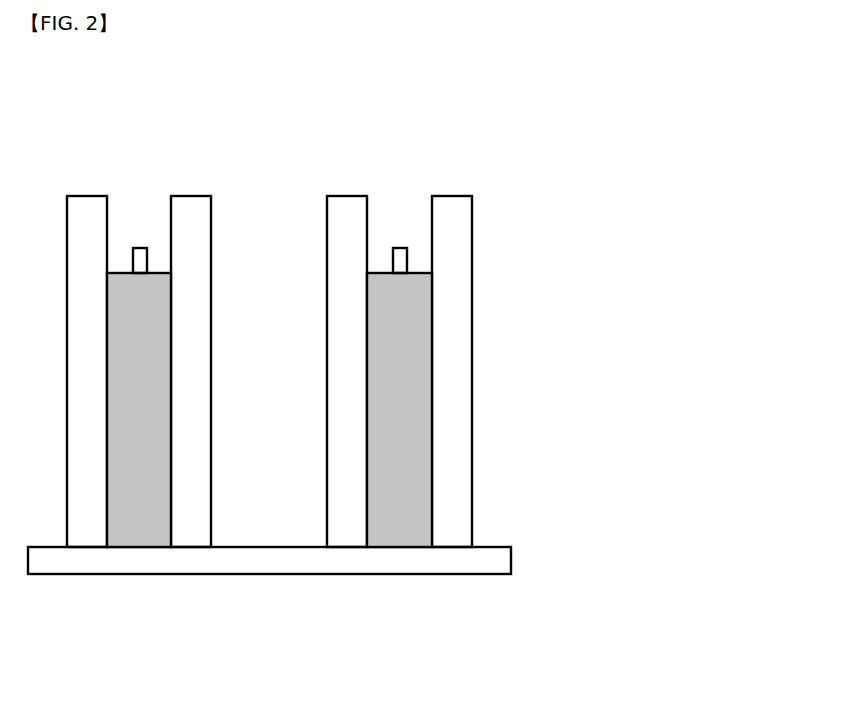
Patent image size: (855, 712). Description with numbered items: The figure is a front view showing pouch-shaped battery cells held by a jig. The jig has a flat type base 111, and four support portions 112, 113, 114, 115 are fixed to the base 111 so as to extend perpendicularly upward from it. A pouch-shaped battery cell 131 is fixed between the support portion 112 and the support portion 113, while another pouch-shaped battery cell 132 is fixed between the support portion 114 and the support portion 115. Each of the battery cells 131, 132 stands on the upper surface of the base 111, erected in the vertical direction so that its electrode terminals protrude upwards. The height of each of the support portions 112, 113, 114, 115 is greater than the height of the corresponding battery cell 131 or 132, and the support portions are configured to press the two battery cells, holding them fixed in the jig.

The base 111 is at (511, 553).
The support portion 112 is at (78, 196).
The support portion 113 is at (198, 197).
The support portion 114 is at (343, 197).
The support portion 115 is at (472, 217).
The pouch-shaped battery cell 131 is at (140, 530).
The pouch-shaped battery cell 132 is at (388, 548).